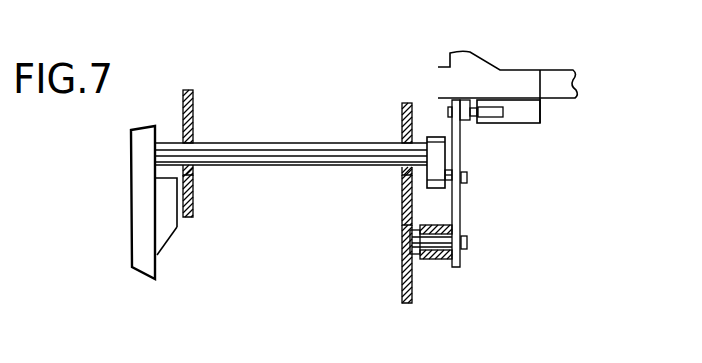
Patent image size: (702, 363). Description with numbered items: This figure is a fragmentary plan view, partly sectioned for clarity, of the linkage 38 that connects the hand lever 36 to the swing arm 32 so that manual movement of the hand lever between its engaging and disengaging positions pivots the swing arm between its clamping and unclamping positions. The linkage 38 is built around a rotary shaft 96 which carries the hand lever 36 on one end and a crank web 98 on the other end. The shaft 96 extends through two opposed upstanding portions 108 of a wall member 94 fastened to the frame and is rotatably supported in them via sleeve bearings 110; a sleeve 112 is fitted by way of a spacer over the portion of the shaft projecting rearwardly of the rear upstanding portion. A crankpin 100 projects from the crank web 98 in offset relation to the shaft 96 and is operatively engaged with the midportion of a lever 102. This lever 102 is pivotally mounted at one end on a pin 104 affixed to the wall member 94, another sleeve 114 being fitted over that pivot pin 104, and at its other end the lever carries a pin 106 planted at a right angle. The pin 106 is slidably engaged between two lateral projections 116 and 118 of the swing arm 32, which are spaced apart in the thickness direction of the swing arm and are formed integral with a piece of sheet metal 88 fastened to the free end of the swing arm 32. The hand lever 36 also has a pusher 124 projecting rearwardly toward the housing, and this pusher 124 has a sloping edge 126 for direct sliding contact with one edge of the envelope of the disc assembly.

The swing arm 32 is at (553, 75).
The hand lever 36 is at (137, 227).
The linkage 38 is at (260, 107).
The piece of sheet metal 88 is at (507, 75).
The wall member 94 is at (401, 280).
The rotary shaft 96 is at (315, 152).
The crank web 98 is at (435, 189).
The crankpin 100 is at (468, 178).
The lever 102 is at (461, 205).
The pin 104 is at (468, 243).
The pin 106 is at (462, 120).
The upstanding portions 108 is at (193, 112).
The sleeve bearings 110 is at (193, 172).
The sleeve 112 is at (423, 140).
The sleeve 114 is at (445, 260).
The lateral projection 116 is at (495, 128).
The lateral projection 118 is at (541, 113).
The pusher 124 is at (178, 230).
The sloping edge 126 is at (163, 253).